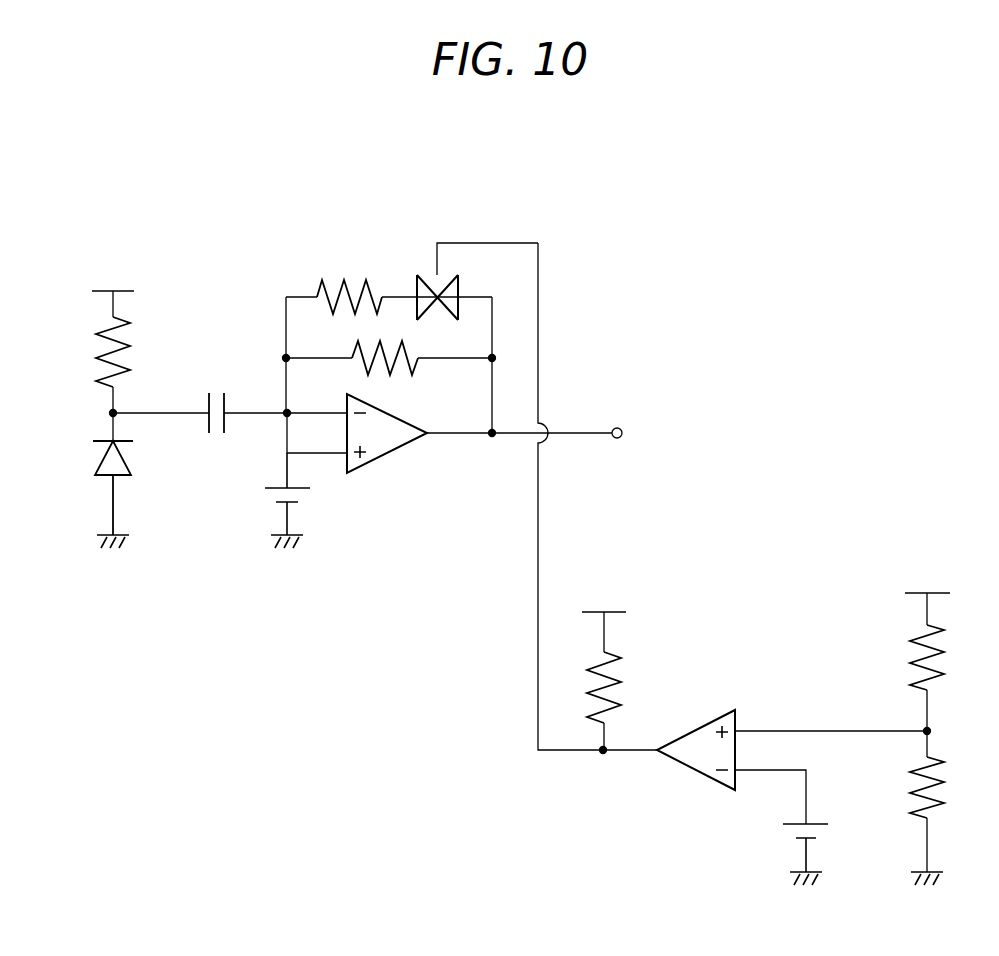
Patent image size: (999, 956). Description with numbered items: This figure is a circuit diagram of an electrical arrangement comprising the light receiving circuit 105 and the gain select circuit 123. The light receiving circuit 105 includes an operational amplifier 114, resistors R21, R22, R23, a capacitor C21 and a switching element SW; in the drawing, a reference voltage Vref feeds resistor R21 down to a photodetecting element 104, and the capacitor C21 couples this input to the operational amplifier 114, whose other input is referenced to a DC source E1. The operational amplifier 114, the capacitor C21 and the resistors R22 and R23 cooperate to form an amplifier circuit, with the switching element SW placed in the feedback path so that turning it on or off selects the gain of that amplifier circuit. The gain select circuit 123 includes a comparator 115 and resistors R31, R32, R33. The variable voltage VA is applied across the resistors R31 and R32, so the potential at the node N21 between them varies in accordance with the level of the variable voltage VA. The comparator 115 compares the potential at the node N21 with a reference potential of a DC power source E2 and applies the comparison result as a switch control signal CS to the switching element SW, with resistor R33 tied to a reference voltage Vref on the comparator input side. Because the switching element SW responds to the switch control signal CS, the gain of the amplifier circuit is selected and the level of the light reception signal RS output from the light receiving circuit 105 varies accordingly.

The light receiving circuit 105 is at (25, 219).
The gain select circuit 123 is at (547, 544).
The photodiode 104 is at (95, 466).
The operational amplifier 114 is at (388, 461).
The comparator 115 is at (697, 729).
The resistor R21 is at (100, 354).
The resistor R22 is at (342, 287).
The resistor R23 is at (402, 372).
The resistor R31 is at (940, 670).
The resistor R32 is at (940, 796).
The resistor R33 is at (624, 702).
The capacitor C21 is at (208, 405).
The reference voltage source E1 is at (275, 488).
The DC power source E2 is at (814, 823).
The switching element SW is at (418, 275).
The node N21 is at (931, 726).
The reference voltage Vref is at (359, 457).
The variable voltage VA is at (927, 595).
The light reception signal RS is at (636, 435).
The switch control signal CS is at (597, 496).